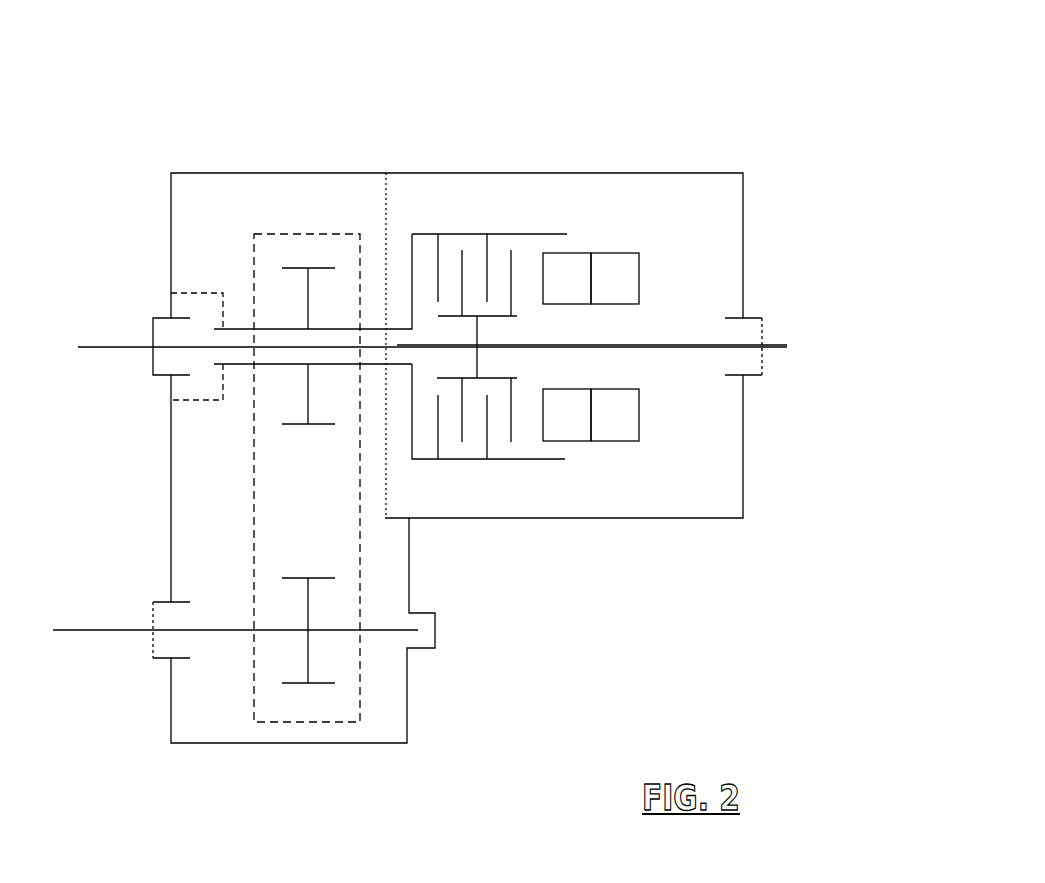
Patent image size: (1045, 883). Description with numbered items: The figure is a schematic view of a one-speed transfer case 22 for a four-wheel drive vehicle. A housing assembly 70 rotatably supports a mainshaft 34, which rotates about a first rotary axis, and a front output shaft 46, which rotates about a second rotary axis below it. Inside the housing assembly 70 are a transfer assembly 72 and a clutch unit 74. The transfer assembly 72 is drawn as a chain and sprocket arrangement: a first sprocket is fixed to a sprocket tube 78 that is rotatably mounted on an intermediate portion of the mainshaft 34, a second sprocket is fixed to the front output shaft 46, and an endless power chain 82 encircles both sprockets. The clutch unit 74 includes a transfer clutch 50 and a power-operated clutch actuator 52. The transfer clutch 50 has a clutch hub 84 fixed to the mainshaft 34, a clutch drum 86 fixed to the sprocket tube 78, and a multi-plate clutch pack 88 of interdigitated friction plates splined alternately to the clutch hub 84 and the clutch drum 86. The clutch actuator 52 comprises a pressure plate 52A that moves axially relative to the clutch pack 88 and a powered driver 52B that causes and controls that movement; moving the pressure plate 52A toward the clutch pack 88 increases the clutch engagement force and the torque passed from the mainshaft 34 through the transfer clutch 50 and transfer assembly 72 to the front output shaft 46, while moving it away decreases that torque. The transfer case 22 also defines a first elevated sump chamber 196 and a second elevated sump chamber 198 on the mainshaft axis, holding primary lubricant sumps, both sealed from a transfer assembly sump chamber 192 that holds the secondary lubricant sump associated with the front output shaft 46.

The transfer case 22 is at (622, 80).
The mainshaft 34 is at (97, 347).
The front output shaft 46 is at (73, 632).
The transfer clutch 50 is at (442, 218).
The power-operated clutch actuator 52 is at (628, 460).
The pressure plate 52A is at (569, 423).
The powered driver 52B is at (627, 420).
The housing assembly 70 is at (213, 173).
The transfer assembly 72 is at (240, 498).
The clutch unit 74 is at (623, 193).
The sprocket tube 78 is at (273, 329).
The endless power chain 82 is at (253, 573).
The clutch hub 84 is at (493, 378).
The clutch drum 86 is at (420, 459).
The multi-plate clutch pack 88 is at (498, 260).
The transfer assembly sump chamber 192 is at (188, 717).
The first elevated sump chamber 196 is at (185, 305).
The second elevated sump chamber 198 is at (705, 268).